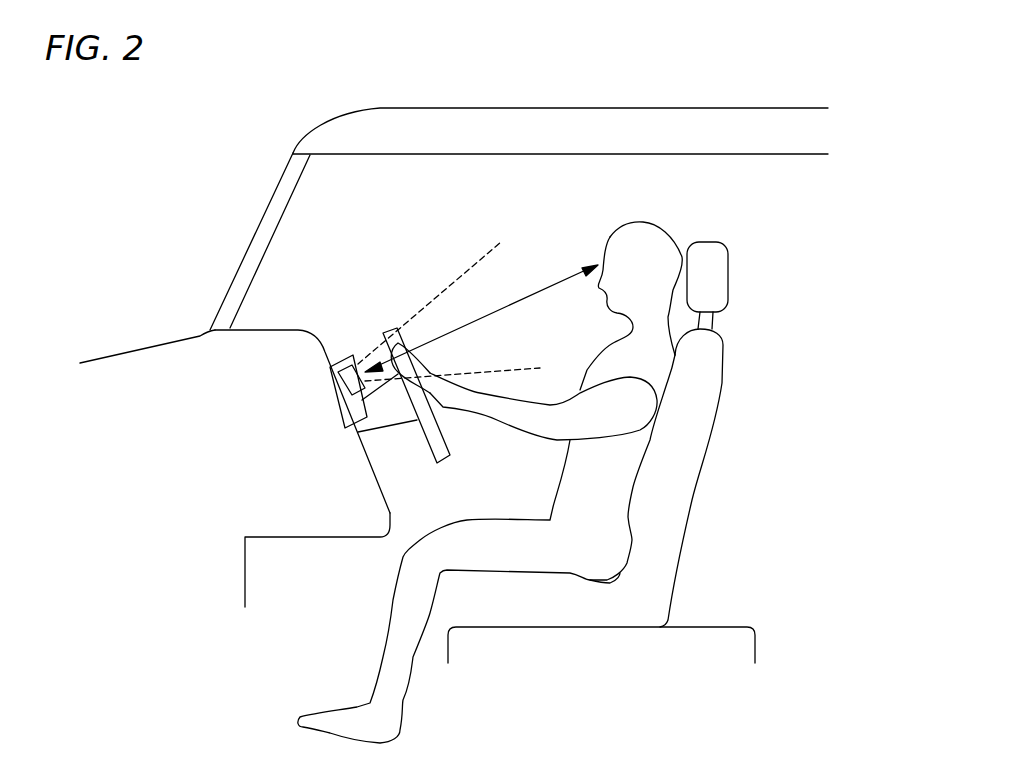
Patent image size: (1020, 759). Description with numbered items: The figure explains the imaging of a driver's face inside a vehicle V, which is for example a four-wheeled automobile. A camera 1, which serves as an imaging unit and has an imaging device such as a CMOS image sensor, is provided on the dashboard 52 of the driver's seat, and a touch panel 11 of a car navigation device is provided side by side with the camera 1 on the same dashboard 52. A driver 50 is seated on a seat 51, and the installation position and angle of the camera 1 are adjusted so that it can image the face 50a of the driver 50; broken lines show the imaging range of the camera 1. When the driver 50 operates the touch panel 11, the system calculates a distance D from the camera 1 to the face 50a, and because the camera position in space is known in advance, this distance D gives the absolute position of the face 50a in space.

The vehicle V is at (647, 108).
The camera 1 is at (410, 341).
The touch panel 11 is at (342, 410).
The distance D is at (520, 300).
The driver 50 is at (490, 470).
The face 50a is at (610, 237).
The seat 51 is at (694, 503).
The dashboard 52 is at (378, 473).